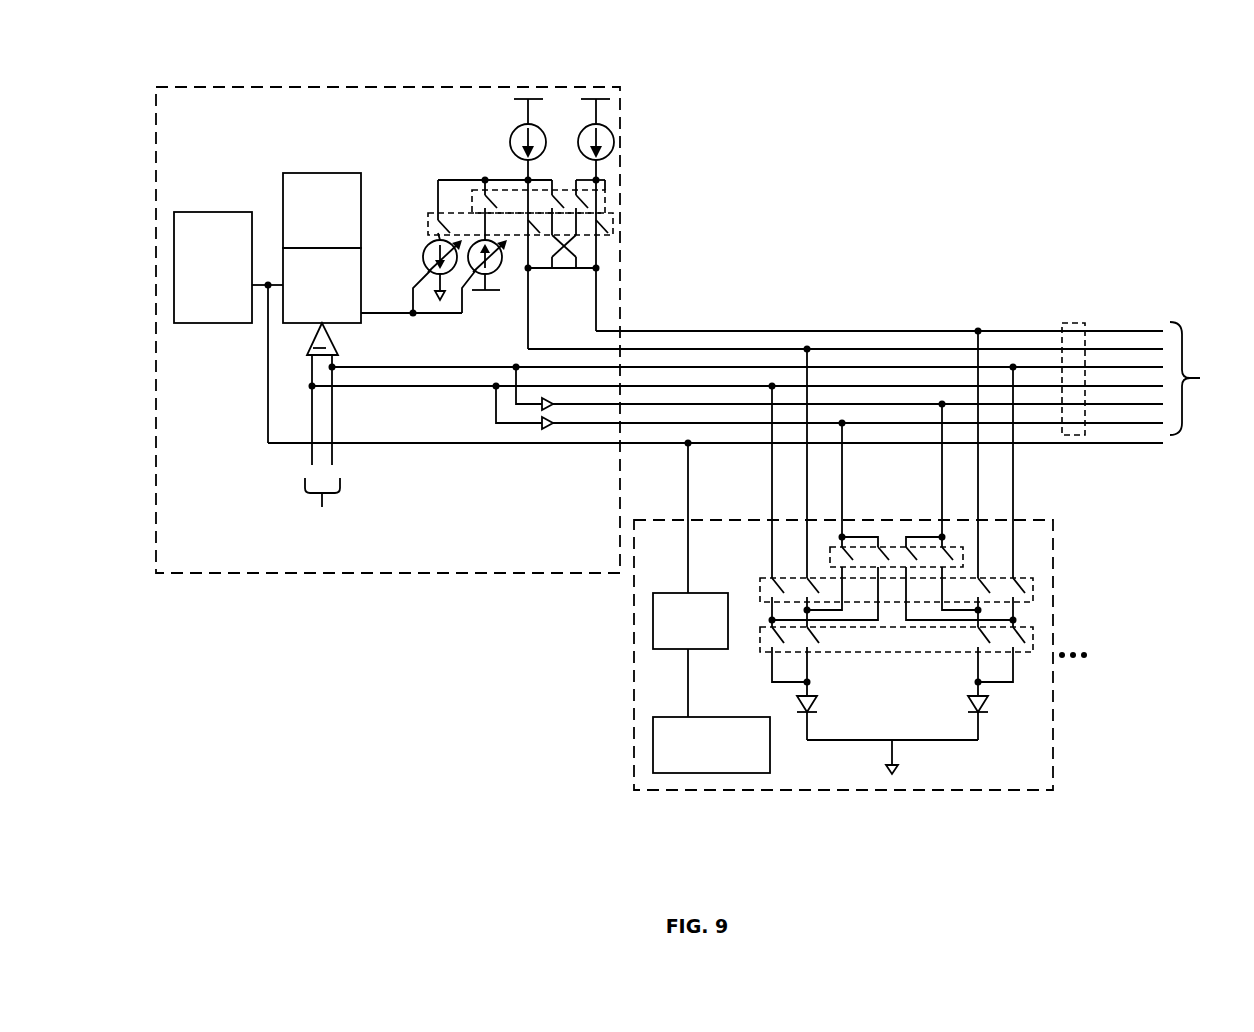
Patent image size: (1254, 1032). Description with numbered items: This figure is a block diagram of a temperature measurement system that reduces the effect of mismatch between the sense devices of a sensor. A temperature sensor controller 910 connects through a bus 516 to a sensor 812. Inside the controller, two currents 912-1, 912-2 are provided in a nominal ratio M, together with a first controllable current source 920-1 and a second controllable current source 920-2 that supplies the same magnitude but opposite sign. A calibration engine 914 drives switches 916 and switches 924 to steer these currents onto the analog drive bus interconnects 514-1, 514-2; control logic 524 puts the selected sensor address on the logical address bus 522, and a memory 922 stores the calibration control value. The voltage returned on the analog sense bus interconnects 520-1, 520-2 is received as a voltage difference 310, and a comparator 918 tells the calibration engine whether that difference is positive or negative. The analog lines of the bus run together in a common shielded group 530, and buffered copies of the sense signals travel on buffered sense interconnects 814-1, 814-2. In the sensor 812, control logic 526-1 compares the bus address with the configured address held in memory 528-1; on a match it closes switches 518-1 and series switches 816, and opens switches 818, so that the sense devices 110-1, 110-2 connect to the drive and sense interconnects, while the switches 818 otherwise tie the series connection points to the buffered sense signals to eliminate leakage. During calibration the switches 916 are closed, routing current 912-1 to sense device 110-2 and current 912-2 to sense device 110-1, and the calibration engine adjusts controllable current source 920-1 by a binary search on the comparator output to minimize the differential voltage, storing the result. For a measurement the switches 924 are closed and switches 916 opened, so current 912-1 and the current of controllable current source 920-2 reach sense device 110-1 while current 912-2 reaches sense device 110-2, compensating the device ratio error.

The temperature sensor controller 910 is at (520, 87).
The current 912-1 is at (514, 130).
The current 912-2 is at (608, 128).
The switches 916 is at (472, 198).
The switches 924 is at (617, 220).
The calibration engine 914 is at (304, 233).
The memory 922 is at (304, 309).
The control logic 524 is at (195, 290).
The controllable current source 920-1 is at (500, 265).
The controllable current source 920-2 is at (426, 245).
The comparator 918 is at (337, 352).
The voltage difference 310 is at (321, 509).
The analog sense bus interconnect 520-1 is at (638, 365).
The analog sense bus interconnect 520-2 is at (653, 385).
The analog drive bus interconnect 514-1 is at (767, 330).
The analog drive bus interconnect 514-2 is at (773, 349).
The buffered sense interconnect 814-1 is at (840, 403).
The buffered sense interconnect 814-2 is at (868, 422).
The common shielded group 530 is at (1072, 322).
The logical address bus 522 is at (1120, 443).
The bus 516 is at (1209, 378).
The switches 818 is at (967, 548).
The switches 518-1 is at (1033, 593).
The series switches 816 is at (1025, 652).
The control logic 526-1 is at (666, 644).
The memory 528-1 is at (688, 769).
The sense device 110-1 is at (817, 700).
The sense device 110-2 is at (970, 700).
The sensor 812 is at (893, 790).